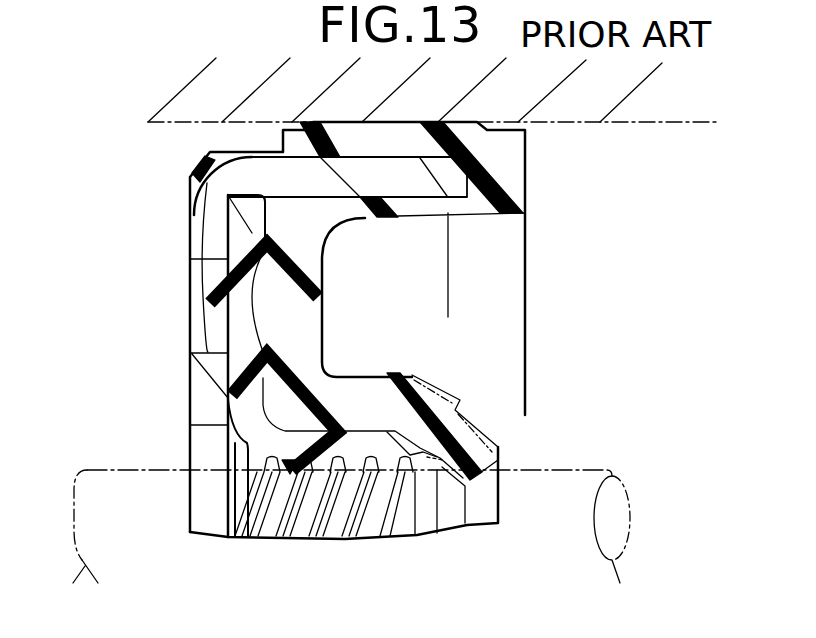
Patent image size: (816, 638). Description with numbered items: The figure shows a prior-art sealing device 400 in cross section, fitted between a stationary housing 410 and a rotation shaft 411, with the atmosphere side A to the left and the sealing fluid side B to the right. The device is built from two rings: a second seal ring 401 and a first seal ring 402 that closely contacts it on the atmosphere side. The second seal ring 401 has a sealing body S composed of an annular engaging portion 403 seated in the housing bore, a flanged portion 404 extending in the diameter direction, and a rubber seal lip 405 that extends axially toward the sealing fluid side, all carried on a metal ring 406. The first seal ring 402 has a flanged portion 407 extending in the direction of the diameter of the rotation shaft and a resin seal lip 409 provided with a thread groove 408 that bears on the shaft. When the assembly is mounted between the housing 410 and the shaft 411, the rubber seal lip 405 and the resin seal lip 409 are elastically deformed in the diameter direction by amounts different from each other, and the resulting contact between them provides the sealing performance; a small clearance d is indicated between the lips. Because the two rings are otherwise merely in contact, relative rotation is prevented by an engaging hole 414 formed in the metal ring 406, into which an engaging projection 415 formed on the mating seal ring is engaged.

The sealing device 400 is at (122, 259).
The second seal ring 401 is at (191, 235).
The first seal ring 402 is at (223, 380).
The annular engaging portion 403 is at (423, 208).
The flanged portion 404 is at (307, 318).
The rubber seal lip 405 is at (453, 417).
The metal ring 406 is at (386, 163).
The flanged portion 407 is at (245, 228).
The thread groove 408 is at (280, 528).
The resin seal lip 409 is at (393, 372).
The housing 410 is at (620, 117).
The rotation shaft 411 is at (560, 468).
The engaging hole 414 is at (197, 353).
The engaging projection 415 is at (222, 330).
The sealing body S is at (528, 185).
The atmosphere side A is at (107, 307).
The sealing fluid side B is at (634, 307).
The gap d is at (396, 436).